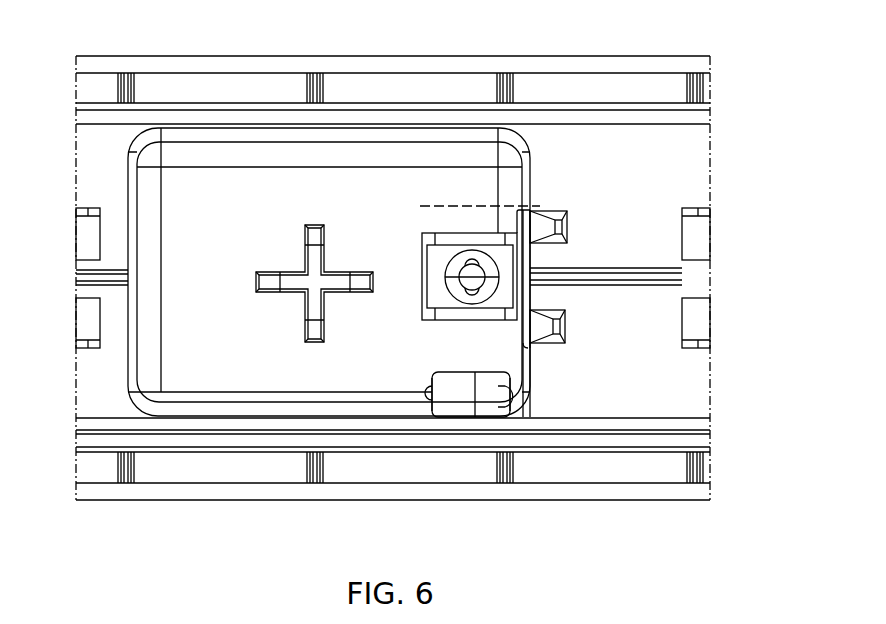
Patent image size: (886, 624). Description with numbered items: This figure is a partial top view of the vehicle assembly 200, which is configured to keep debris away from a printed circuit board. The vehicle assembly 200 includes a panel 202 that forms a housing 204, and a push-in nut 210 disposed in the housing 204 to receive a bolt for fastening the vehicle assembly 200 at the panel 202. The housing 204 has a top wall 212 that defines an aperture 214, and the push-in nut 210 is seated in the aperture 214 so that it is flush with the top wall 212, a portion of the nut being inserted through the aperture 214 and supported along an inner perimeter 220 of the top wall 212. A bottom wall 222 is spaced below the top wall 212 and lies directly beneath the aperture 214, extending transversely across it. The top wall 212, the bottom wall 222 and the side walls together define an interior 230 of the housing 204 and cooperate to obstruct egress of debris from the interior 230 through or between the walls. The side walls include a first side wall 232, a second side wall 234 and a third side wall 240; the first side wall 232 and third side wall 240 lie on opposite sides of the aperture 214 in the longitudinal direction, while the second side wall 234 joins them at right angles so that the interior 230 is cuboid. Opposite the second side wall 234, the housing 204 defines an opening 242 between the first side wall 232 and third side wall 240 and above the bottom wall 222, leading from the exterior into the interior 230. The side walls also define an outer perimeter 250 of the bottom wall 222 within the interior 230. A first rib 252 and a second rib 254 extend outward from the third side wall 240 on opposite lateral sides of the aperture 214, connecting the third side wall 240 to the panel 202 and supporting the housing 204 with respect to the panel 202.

The vehicle assembly 200 is at (657, 155).
The panel 202 is at (575, 143).
The housing 204 is at (567, 320).
The push-in nut 210 is at (510, 297).
The top wall 212 is at (455, 345).
The aperture 214 is at (453, 233).
The inner perimeter 220 is at (478, 233).
The bottom wall 222 is at (497, 405).
The interior 230 is at (457, 392).
The first side wall 232 is at (433, 380).
The second side wall 234 is at (437, 205).
The third side wall 240 is at (500, 352).
The opening 242 is at (475, 372).
The outer perimeter of the bottom wall 250 is at (453, 390).
The first rib 252 is at (570, 237).
The second rib 254 is at (567, 323).